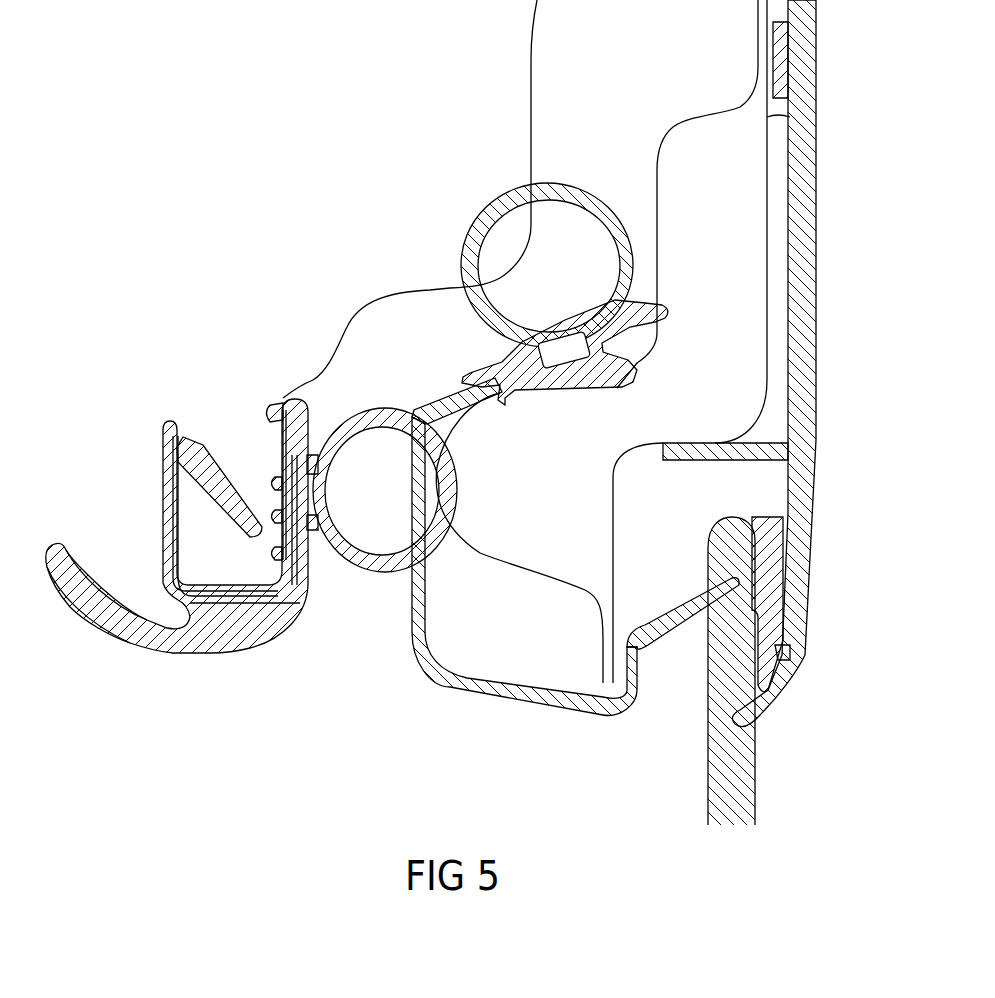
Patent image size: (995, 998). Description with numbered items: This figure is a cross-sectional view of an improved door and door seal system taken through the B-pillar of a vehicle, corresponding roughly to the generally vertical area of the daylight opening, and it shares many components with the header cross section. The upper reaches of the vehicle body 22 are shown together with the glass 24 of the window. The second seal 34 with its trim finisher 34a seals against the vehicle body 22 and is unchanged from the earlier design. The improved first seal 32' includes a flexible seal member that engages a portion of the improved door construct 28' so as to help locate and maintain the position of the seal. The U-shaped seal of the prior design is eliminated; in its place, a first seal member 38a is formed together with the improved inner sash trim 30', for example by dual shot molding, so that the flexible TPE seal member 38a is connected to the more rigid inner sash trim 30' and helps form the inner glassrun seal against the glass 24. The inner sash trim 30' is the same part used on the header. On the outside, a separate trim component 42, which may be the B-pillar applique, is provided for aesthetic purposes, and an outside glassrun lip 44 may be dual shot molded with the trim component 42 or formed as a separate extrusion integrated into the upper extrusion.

The vehicle body 22 is at (367, 310).
The glass 24 is at (706, 798).
The improved door construct 28' is at (795, 363).
The improved inner sash trim 30' is at (524, 555).
The improved first seal 32' is at (564, 277).
The second seal 34 is at (177, 655).
The trim finisher 34a is at (70, 553).
The first seal member 38a is at (670, 643).
The trim component 42 is at (815, 334).
The outside glassrun lip 44 is at (782, 703).